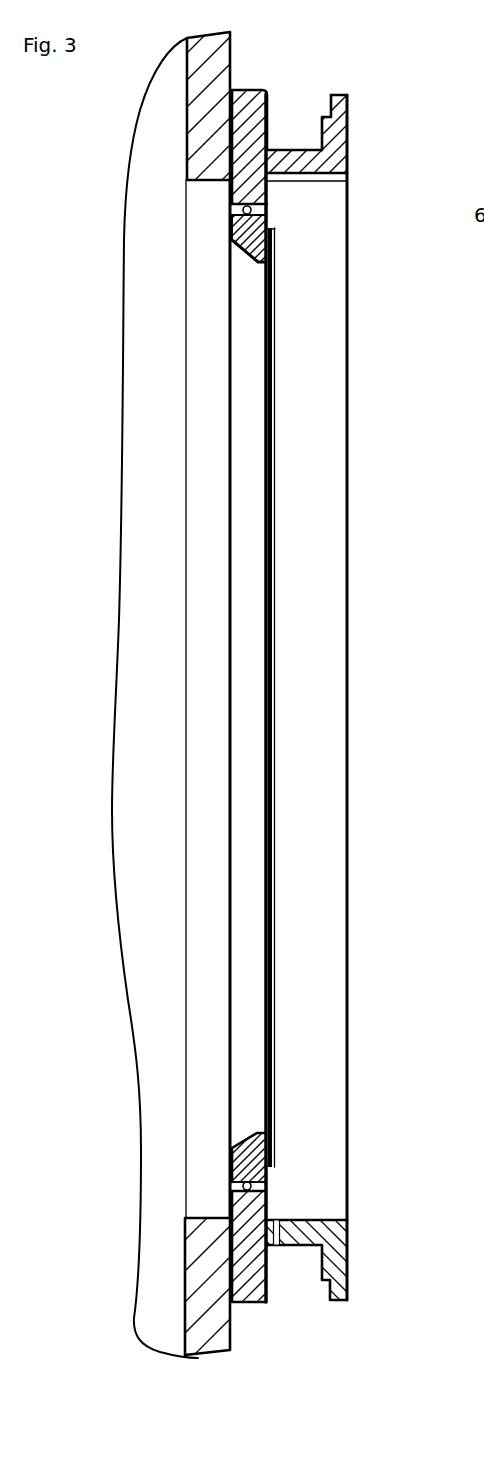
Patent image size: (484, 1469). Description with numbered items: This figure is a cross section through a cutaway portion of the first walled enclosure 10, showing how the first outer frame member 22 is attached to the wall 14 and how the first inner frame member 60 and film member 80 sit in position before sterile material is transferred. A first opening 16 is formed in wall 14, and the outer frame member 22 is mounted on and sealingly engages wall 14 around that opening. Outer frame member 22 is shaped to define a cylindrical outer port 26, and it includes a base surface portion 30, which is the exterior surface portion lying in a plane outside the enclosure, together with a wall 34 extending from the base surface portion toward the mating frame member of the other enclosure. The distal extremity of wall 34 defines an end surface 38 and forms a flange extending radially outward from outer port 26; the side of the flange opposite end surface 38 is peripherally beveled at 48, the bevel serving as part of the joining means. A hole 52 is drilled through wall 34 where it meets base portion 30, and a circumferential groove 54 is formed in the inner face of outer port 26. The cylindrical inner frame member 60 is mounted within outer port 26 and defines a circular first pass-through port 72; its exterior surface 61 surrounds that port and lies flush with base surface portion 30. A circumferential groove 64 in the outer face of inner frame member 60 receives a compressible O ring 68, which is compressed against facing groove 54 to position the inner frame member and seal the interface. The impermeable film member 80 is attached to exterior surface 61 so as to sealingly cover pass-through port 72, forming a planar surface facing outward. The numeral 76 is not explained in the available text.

The first walled enclosure 10 is at (175, 421).
The wall 14 is at (232, 56).
The first opening 16 is at (187, 181).
The first outer frame member 22 is at (253, 90).
The outer port 26 is at (232, 207).
The base surface portion 30 is at (268, 182).
The wall 34 is at (297, 150).
The end surface 38 is at (348, 130).
The bevel 48 is at (327, 107).
The hole 52 is at (277, 1227).
The circumferential groove 54 is at (237, 202).
The first inner frame member 60 is at (230, 243).
The exterior surface 61 is at (268, 220).
The circumferential groove 64 is at (272, 245).
The O ring 68 is at (268, 210).
The first pass-through port 72 is at (228, 470).
The chamfer 76 is at (231, 262).
The film member 80 is at (273, 357).